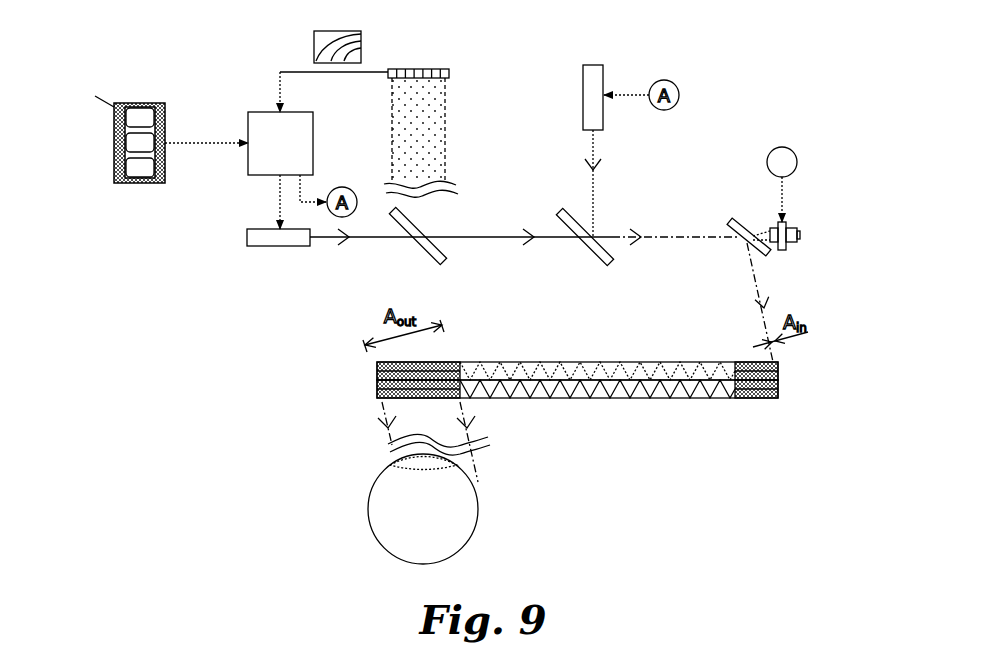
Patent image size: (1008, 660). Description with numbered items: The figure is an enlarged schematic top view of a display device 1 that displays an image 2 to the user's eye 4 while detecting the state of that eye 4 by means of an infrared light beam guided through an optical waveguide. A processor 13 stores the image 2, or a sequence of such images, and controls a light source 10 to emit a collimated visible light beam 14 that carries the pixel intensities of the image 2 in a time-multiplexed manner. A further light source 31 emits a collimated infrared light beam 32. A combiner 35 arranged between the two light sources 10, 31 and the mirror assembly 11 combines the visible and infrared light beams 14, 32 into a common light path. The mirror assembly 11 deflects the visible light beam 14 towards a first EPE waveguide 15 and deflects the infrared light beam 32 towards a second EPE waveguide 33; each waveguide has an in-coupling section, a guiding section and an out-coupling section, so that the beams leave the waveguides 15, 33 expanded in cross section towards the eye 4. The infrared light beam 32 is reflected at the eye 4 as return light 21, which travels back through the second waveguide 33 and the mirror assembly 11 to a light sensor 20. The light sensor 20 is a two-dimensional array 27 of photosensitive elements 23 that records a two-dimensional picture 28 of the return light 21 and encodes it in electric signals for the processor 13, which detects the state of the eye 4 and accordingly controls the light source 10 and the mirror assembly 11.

The display device 1 is at (213, 422).
The image 2 is at (130, 119).
The eye 4 is at (377, 542).
The light source 10 is at (603, 72).
The mirror assembly 11 is at (813, 231).
The processor 13 is at (313, 150).
The visible light beam 14 is at (596, 212).
The first EPE waveguide 15 is at (576, 351).
The light sensor 20 is at (480, 66).
The return light 21 is at (443, 168).
The photosensitive elements 23 is at (449, 78).
The two-dimensional array 27 is at (449, 57).
The two-dimensional picture 28 is at (314, 46).
The further light source 31 is at (273, 246).
The infrared light beam 32 is at (365, 239).
The second EPE waveguide 33 is at (576, 420).
The combiner 35 is at (605, 262).